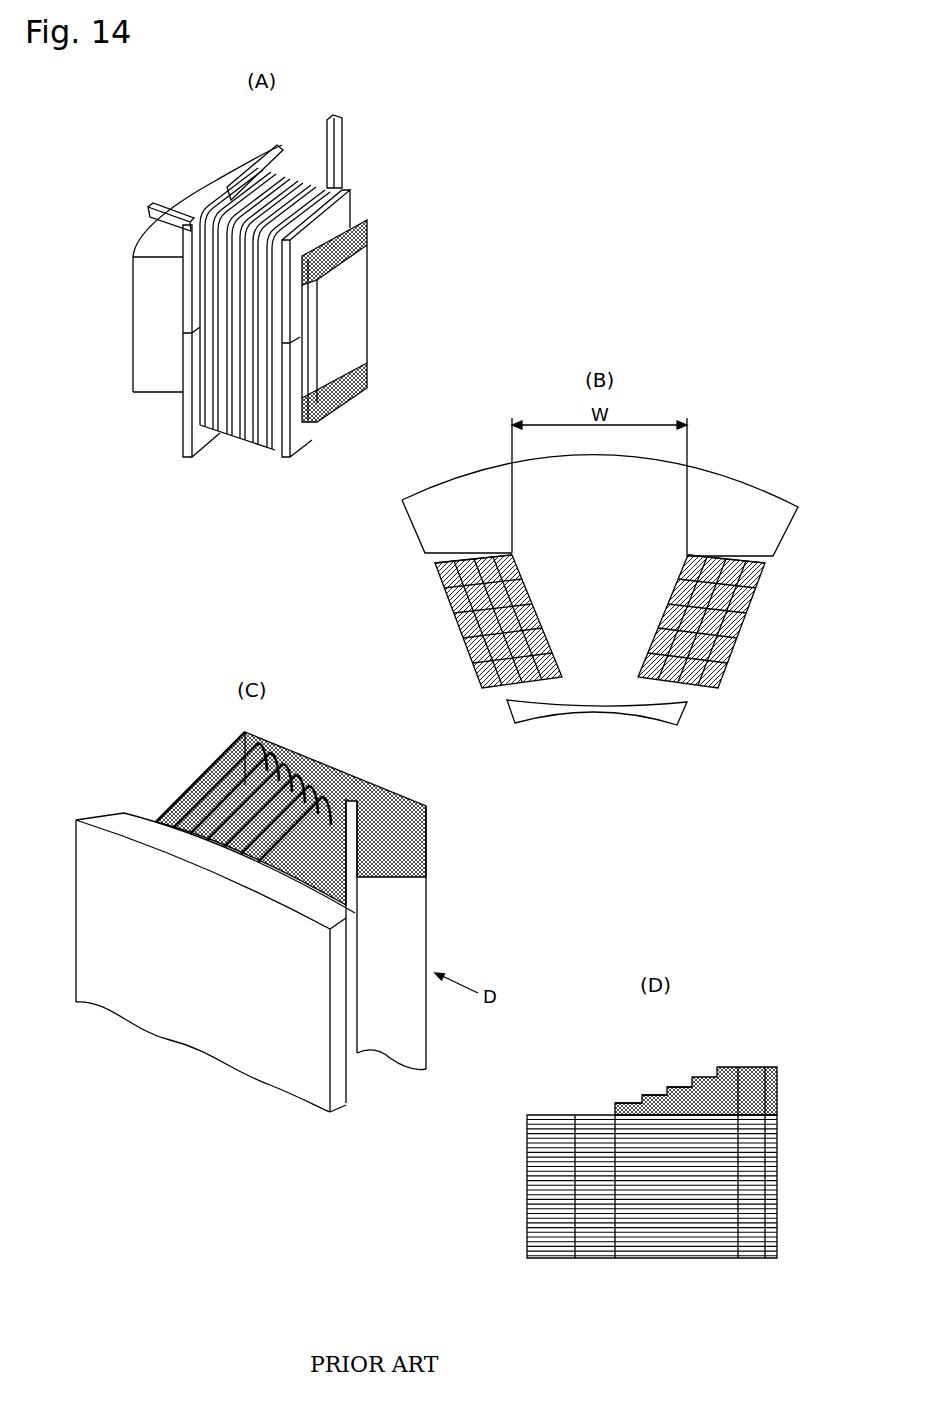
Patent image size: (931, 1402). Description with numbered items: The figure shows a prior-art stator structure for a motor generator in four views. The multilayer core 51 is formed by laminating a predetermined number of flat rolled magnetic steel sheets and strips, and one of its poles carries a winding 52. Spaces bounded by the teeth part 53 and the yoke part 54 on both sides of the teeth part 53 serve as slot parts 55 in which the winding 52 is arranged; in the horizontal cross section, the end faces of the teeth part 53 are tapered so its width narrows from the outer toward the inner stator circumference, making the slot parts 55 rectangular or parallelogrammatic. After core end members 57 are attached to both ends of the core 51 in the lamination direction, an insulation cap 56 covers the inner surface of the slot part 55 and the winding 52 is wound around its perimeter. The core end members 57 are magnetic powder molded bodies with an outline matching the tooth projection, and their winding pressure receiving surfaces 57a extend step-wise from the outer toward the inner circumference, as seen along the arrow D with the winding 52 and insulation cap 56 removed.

The multilayer core 51 is at (129, 352).
The winding 52 is at (343, 140).
The teeth part 53 is at (593, 637).
The yoke part 54 is at (200, 195).
The slot part 55 is at (438, 577).
The insulation cap 56 is at (265, 153).
The core end member 57 is at (372, 228).
The winding pressure receiving surface 57a is at (222, 803).